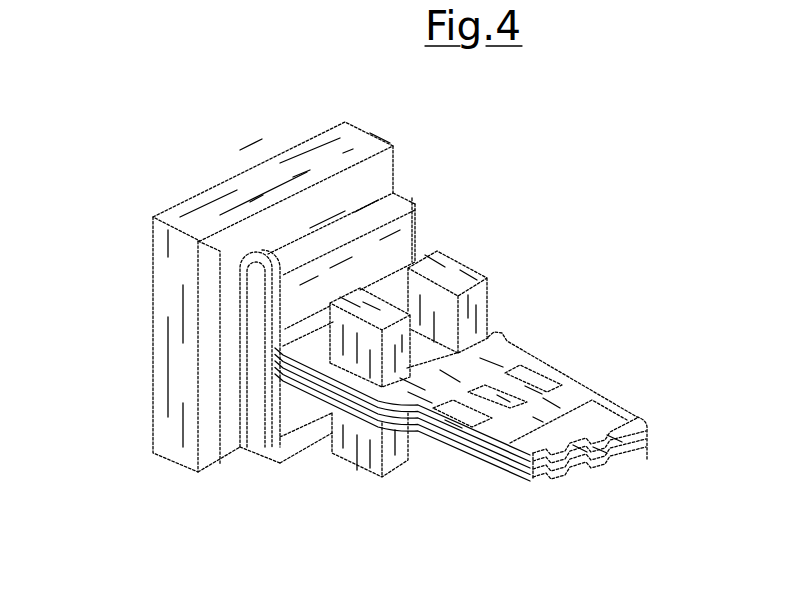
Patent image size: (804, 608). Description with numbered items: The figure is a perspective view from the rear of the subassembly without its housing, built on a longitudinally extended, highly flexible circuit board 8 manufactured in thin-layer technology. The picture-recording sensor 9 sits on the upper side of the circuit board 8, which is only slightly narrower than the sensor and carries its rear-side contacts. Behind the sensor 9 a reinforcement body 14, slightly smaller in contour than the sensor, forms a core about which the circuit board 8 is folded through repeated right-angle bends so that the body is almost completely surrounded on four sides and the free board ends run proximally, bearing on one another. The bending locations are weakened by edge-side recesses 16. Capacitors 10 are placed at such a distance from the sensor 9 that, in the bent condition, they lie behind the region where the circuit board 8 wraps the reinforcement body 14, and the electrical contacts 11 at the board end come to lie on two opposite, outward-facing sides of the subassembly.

The circuit board 8 is at (400, 245).
The picture-recording sensor 9 is at (368, 144).
The capacitors 10 is at (440, 278).
The electrical contacts 11 is at (455, 442).
The reinforcement body 14 is at (262, 440).
The edge-side recesses 16 is at (403, 198).